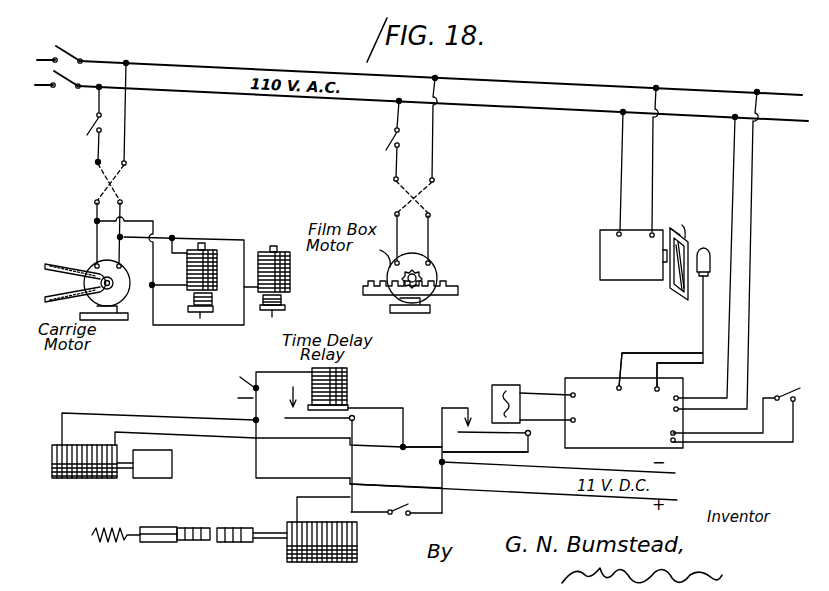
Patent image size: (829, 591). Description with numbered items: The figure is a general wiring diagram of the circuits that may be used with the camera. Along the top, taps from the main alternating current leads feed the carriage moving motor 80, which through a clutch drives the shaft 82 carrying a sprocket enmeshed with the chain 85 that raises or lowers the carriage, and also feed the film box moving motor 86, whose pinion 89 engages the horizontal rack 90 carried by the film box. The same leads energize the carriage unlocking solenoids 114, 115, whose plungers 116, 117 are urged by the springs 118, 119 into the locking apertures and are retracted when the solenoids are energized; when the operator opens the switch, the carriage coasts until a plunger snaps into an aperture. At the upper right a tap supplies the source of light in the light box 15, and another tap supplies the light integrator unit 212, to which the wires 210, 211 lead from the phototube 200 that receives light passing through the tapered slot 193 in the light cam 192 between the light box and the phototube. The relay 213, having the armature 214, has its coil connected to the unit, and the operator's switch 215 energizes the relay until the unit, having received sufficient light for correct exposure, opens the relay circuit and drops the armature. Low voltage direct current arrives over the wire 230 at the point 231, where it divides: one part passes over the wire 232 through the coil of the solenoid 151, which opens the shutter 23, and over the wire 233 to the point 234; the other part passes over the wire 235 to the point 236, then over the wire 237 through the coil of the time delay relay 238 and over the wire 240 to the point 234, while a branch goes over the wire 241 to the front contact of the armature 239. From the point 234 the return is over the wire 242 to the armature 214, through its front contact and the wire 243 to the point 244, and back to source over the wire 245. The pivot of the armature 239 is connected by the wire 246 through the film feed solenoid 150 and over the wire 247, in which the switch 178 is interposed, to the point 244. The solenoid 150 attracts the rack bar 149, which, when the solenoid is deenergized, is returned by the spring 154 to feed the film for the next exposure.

The light box 15 is at (600, 238).
The shutter 23 is at (172, 472).
The reversible electric motor 80 is at (92, 258).
The shaft 82 is at (82, 283).
The chain 85 is at (58, 255).
The reversible electric motor 86 is at (387, 268).
The pinion 89 is at (438, 265).
The horizontal rack 90 is at (453, 287).
The electric solenoid 114 is at (290, 277).
The electric solenoid 115 is at (214, 262).
The plunger 116 is at (273, 316).
The plunger 117 is at (200, 318).
The spring 118 is at (285, 300).
The spring 119 is at (193, 302).
The rack bar 149 is at (233, 522).
The film feed solenoid 150 is at (320, 562).
The solenoid 151 is at (58, 478).
The rack spring 154 is at (95, 542).
The switch 178 is at (392, 518).
The mirror 192 is at (672, 297).
The tapered slot 193 is at (683, 232).
The phototube 200 is at (715, 233).
The wire 210 is at (650, 337).
The wire 211 is at (675, 365).
The light integrator unit 212 is at (590, 378).
The relay 213 is at (503, 385).
The armature 214 is at (487, 444).
The switch 215 is at (780, 393).
The wire 230 is at (258, 460).
The point 231 is at (303, 430).
The wire 232 is at (138, 403).
The wire 233 is at (220, 438).
The point 234 is at (396, 469).
The wire 235 is at (225, 398).
The point 236 is at (225, 377).
The wire 237 is at (276, 372).
The time delay relay 238 is at (344, 383).
The armature 239 is at (302, 419).
The wire 240 is at (350, 403).
The wire 241 is at (288, 389).
The wire 242 is at (470, 453).
The wire 243 is at (453, 403).
The point 244 is at (422, 462).
The wire 245 is at (550, 470).
The wire 246 is at (307, 493).
The wire 247 is at (443, 505).